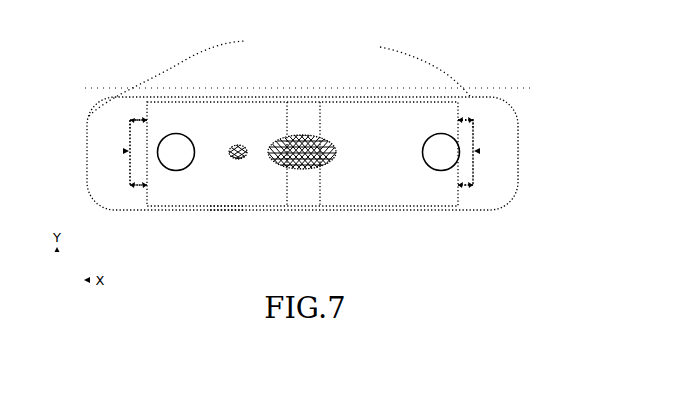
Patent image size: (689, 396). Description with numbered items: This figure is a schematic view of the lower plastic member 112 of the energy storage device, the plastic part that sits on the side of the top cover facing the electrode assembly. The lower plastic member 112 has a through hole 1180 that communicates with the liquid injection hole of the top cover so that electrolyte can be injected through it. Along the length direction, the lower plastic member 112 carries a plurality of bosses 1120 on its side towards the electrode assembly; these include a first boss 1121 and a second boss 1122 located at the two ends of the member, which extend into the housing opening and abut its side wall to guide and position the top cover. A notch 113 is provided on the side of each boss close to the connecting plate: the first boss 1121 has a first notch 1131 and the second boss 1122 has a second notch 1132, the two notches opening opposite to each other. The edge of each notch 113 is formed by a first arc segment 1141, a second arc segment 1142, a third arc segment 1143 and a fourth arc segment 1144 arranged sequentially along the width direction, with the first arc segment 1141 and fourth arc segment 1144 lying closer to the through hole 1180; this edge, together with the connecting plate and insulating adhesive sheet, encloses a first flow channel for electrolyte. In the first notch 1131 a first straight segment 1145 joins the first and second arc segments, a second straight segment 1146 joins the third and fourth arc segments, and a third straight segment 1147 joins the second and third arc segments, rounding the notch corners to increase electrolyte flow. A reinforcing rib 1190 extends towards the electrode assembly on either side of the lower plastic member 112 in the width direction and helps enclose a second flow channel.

The lower plastic member 112 is at (50, 28).
The bosses 1120 is at (352, 30).
The first boss 1121 is at (184, 77).
The second boss 1122 is at (406, 67).
The notch 113 is at (363, 250).
The first notch 1131 is at (186, 167).
The second notch 1132 is at (428, 166).
The first arc segment 1141 is at (177, 205).
The second arc segment 1142 is at (104, 185).
The third arc segment 1143 is at (128, 120).
The fourth arc segment 1144 is at (150, 119).
The first straight segment 1145 is at (129, 186).
The second straight segment 1146 is at (138, 118).
The third straight segment 1147 is at (124, 151).
The through hole 1180 is at (247, 145).
The reinforcing rib 1190 is at (226, 207).